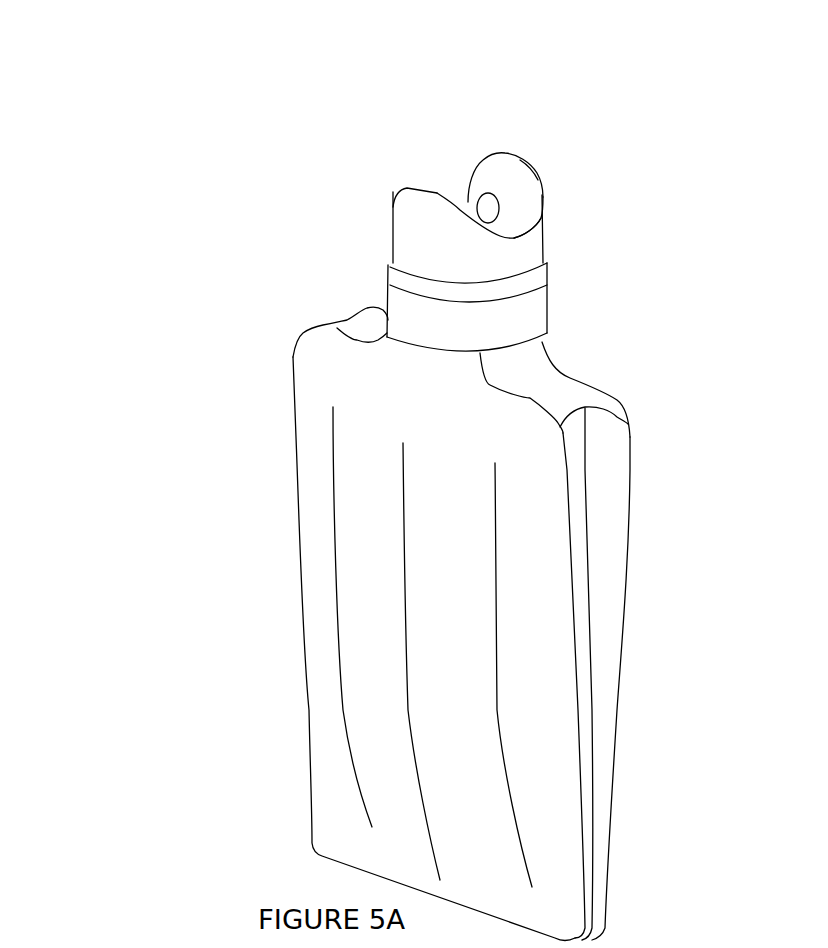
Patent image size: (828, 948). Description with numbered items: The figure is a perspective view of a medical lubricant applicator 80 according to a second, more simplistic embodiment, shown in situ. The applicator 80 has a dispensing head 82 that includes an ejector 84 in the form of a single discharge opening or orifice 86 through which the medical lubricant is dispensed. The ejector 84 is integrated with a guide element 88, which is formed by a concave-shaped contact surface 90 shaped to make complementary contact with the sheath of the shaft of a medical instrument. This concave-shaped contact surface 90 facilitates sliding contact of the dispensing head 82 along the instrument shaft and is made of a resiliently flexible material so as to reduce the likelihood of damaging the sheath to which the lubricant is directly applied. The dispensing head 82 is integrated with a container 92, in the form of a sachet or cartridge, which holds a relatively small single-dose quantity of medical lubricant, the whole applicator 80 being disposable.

The medical lubricant applicator 80 is at (247, 420).
The dispensing head 82 is at (557, 250).
The ejector 84 is at (489, 190).
The discharge opening 86 is at (482, 213).
The guide element 88 is at (520, 190).
The concave-shaped contact surface 90 is at (518, 220).
The container 92 is at (380, 628).